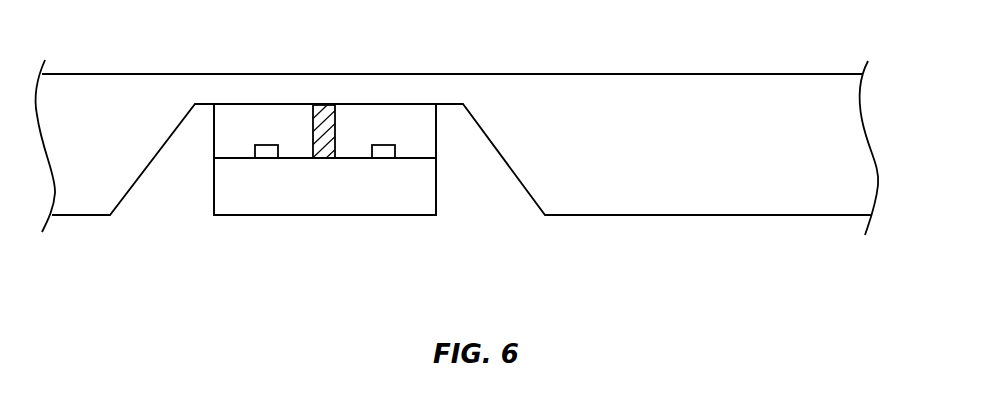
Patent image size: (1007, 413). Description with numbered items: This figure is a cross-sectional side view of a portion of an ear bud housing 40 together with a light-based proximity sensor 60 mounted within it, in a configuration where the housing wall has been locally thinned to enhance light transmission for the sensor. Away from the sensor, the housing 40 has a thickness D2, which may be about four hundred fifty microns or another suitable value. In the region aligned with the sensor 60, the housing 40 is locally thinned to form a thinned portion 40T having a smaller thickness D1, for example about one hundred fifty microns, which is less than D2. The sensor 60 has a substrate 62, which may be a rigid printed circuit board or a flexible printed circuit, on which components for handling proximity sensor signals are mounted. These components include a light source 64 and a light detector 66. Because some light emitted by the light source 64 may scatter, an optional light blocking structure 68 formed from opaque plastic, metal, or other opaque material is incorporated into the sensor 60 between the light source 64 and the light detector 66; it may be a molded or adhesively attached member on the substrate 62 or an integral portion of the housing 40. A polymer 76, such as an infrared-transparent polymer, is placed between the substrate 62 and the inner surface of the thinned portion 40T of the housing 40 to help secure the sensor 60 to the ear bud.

The housing 40 is at (899, 65).
The thinned portion 40T is at (465, 49).
The light-based proximity sensor 60 is at (449, 110).
The substrate 62 is at (228, 202).
The light source 64 is at (268, 152).
The light detector 66 is at (388, 155).
The light blocking structure 68 is at (325, 160).
The polymer 76 is at (229, 137).
The thickness of thinned portion D1 is at (379, 74).
The thickness of housing D2 is at (83, 74).